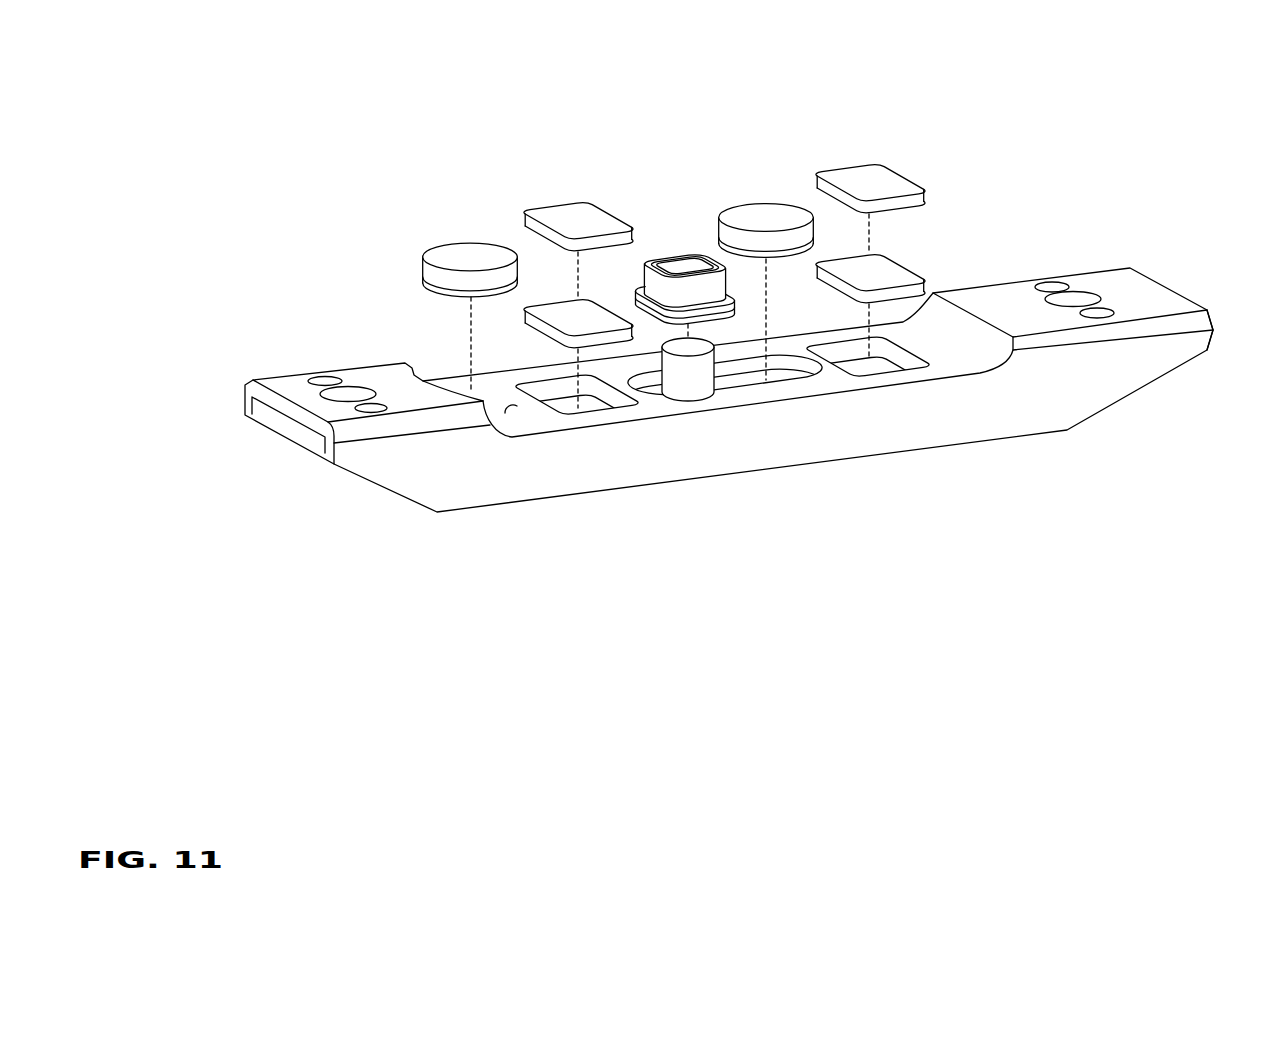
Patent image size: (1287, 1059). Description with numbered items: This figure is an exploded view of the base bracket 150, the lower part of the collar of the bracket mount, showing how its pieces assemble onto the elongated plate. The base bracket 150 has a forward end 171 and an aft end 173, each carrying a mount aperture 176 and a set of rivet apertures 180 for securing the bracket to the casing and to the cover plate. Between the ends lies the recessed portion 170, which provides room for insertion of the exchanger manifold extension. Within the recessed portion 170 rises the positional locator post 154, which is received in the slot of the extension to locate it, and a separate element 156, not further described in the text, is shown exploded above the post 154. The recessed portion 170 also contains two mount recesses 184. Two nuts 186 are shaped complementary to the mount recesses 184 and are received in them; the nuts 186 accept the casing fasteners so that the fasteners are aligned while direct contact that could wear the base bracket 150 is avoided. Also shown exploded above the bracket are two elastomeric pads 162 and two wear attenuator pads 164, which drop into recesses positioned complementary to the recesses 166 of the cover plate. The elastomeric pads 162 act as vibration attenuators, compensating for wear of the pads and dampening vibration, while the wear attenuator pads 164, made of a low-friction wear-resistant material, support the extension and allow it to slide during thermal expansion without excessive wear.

The base bracket 150 is at (266, 246).
The positional locator post 154 is at (698, 380).
The oval boss 156 is at (673, 250).
The elastomeric pads 162 is at (553, 305).
The wear attenuator pads 164 is at (566, 212).
The recesses 166 is at (605, 406).
The recessed portion 170 is at (973, 350).
The forward end 171 is at (295, 433).
The aft end 173 is at (1215, 334).
The mount apertures 176 is at (350, 387).
The rivet apertures 180 is at (313, 378).
The mount recesses 184 is at (512, 387).
The nuts 186 is at (460, 257).